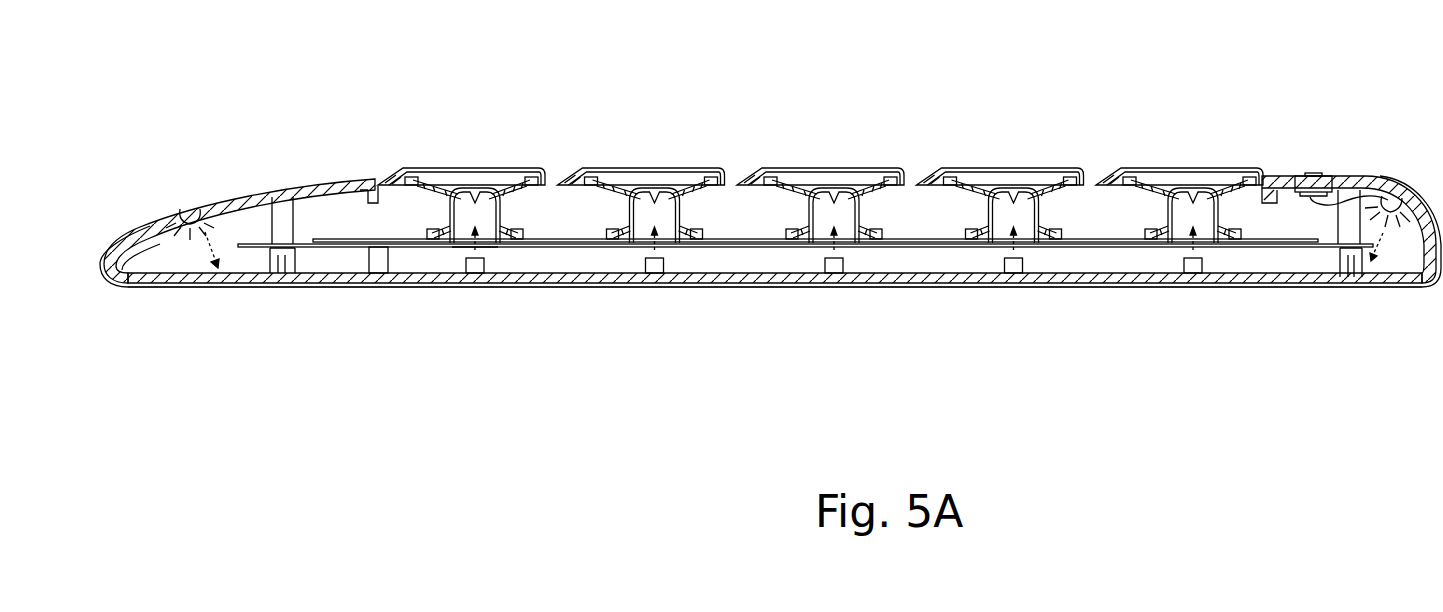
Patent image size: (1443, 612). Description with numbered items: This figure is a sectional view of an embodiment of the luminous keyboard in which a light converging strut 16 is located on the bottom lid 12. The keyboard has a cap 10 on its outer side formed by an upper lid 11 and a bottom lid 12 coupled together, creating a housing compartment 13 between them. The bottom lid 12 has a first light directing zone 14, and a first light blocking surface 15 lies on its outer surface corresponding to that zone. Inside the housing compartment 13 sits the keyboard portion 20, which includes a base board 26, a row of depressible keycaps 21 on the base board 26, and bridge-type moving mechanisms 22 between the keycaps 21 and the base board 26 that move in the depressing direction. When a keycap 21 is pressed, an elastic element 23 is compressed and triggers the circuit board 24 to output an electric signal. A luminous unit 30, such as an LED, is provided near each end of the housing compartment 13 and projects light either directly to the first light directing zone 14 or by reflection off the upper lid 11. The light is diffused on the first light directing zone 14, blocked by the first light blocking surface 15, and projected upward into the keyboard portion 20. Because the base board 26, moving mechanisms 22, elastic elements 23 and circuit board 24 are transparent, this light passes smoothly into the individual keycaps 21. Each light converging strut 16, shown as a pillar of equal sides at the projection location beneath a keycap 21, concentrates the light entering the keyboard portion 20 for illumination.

The cap 10 is at (112, 230).
The upper lid 11 is at (233, 197).
The bottom lid 12 is at (237, 288).
The housing compartment 13 is at (162, 238).
The first light directing zone 14 is at (325, 273).
The first light blocking surface 15 is at (353, 289).
The light converging strut 16 is at (475, 275).
The keyboard portion 20 is at (424, 158).
The keycap 21 is at (456, 186).
The moving mechanism 22 is at (497, 205).
The elastic element 23 is at (498, 236).
The circuit board 24 is at (547, 239).
The base board 26 is at (573, 248).
The luminous unit 30 is at (190, 216).